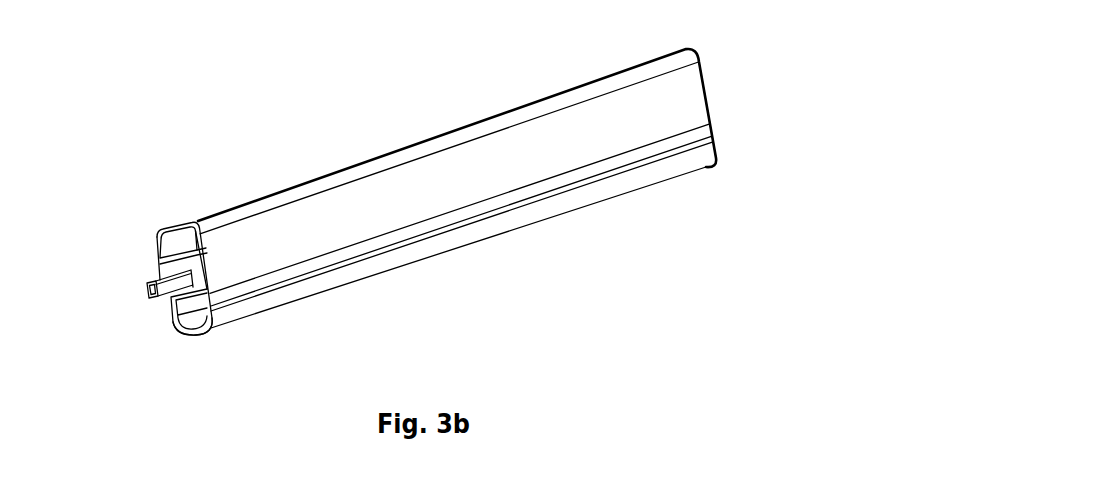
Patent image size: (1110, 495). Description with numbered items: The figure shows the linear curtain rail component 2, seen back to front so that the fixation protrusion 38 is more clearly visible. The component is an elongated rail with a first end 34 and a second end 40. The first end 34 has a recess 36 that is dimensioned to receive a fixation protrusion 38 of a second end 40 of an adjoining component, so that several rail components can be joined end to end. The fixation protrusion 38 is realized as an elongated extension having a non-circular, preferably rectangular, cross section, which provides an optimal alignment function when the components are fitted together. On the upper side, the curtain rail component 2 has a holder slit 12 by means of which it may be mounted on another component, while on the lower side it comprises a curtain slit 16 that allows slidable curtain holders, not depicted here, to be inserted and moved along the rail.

The linear curtain rail component 2 is at (448, 200).
The holder slit 12 is at (398, 140).
The curtain slit 16 is at (196, 340).
The first end 34 is at (692, 108).
The recess 36 is at (722, 100).
The fixation protrusion 38 is at (147, 293).
The second end 40 is at (217, 265).